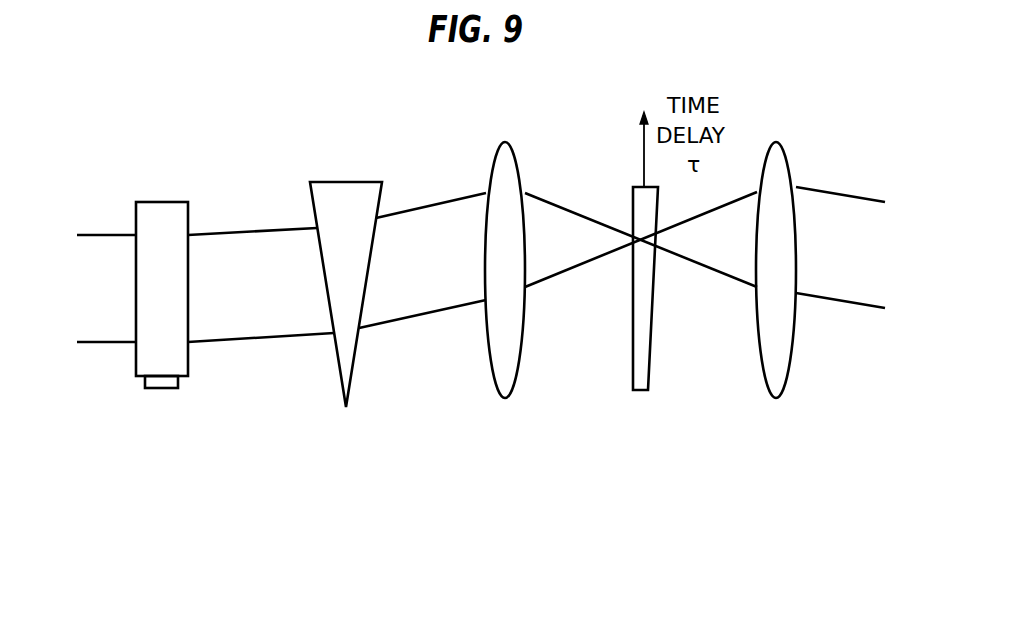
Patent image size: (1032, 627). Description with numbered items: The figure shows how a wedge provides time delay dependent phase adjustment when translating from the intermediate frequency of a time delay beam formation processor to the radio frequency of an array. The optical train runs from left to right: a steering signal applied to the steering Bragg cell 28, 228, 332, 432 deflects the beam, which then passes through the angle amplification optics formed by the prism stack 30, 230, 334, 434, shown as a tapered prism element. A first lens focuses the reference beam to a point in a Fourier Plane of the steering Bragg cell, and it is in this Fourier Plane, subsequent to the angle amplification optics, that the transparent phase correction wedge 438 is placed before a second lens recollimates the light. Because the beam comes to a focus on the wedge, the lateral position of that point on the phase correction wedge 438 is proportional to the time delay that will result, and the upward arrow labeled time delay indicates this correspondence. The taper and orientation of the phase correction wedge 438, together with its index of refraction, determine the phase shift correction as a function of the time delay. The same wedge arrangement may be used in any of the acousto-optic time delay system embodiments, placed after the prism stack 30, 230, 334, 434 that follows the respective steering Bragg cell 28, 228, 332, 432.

The steering Bragg cell 28 is at (144, 371).
The steering Bragg cell 228 is at (144, 371).
The steering Bragg cell 332 is at (144, 371).
The steering Bragg cell 432 is at (164, 391).
The prism stack 30 is at (401, 376).
The prism stack 230 is at (401, 376).
The prism stack 334 is at (401, 376).
The prism stack 434 is at (346, 418).
The transparent phase correction wedge 438 is at (634, 400).